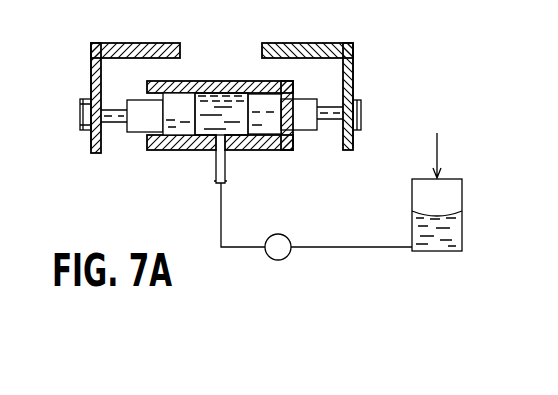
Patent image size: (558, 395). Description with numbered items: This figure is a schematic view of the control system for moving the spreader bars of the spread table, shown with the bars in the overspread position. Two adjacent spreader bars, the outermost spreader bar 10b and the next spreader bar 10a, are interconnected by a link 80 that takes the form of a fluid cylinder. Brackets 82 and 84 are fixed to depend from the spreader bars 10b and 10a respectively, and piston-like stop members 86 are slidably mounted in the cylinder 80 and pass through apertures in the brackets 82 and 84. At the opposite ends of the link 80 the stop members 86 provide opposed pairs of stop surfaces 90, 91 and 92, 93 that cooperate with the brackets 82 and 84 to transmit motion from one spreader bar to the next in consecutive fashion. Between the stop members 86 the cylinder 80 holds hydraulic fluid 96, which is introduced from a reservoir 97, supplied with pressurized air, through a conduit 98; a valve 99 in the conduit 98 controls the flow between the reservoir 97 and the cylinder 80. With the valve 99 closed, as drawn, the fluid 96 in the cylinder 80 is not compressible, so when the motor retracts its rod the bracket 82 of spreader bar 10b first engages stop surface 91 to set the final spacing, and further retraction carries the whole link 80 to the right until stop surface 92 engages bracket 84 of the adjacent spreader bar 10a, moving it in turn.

The spreader bar 10a is at (292, 42).
The outermost spreader bar 10b is at (161, 42).
The link 80 is at (240, 81).
The bracket 82 is at (90, 85).
The bracket 84 is at (353, 78).
The stop member 86 is at (148, 126).
The stop surface 90 is at (89, 136).
The stop surface 91 is at (125, 128).
The stop surface 92 is at (322, 131).
The stop surface 93 is at (352, 143).
The fluid 96 is at (208, 130).
The reservoir 97 is at (447, 233).
The conduit 98 is at (227, 176).
The valve 99 is at (286, 235).